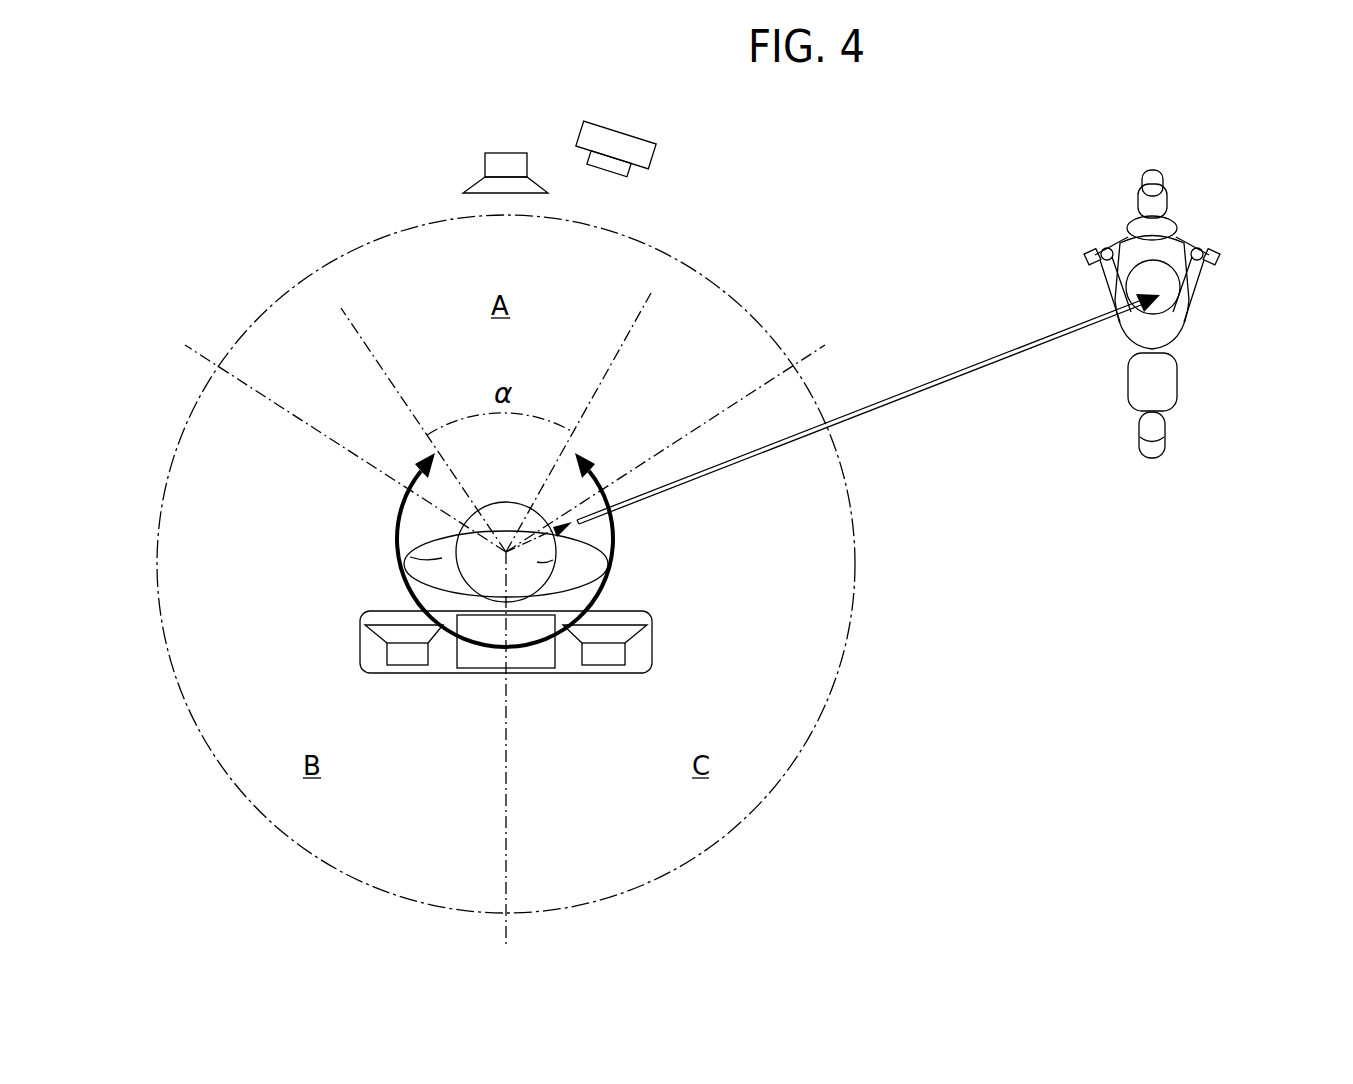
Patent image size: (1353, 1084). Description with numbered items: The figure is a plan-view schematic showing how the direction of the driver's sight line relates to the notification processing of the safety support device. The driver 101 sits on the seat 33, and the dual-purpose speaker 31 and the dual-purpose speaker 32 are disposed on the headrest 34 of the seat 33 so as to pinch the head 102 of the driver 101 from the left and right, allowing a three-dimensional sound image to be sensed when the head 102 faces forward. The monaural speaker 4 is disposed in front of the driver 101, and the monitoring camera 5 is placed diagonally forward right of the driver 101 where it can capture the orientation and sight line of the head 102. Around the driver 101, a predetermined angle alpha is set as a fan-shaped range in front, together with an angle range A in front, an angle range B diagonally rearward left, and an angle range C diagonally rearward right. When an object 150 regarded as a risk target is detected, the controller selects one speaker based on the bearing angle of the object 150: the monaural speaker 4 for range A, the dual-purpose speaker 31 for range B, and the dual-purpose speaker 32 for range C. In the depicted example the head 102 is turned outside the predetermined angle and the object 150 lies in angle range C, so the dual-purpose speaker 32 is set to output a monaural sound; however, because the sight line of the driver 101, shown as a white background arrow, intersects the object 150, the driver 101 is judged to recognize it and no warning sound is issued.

The monaural speaker 4 is at (510, 183).
The monitoring camera 5 is at (628, 133).
The dual-purpose speaker 31 is at (410, 662).
The dual-purpose speaker 32 is at (605, 662).
The seat 33 is at (682, 614).
The headrest 34 is at (646, 647).
The driver 101 is at (408, 562).
The head 102 is at (578, 530).
The object 150 is at (1188, 340).